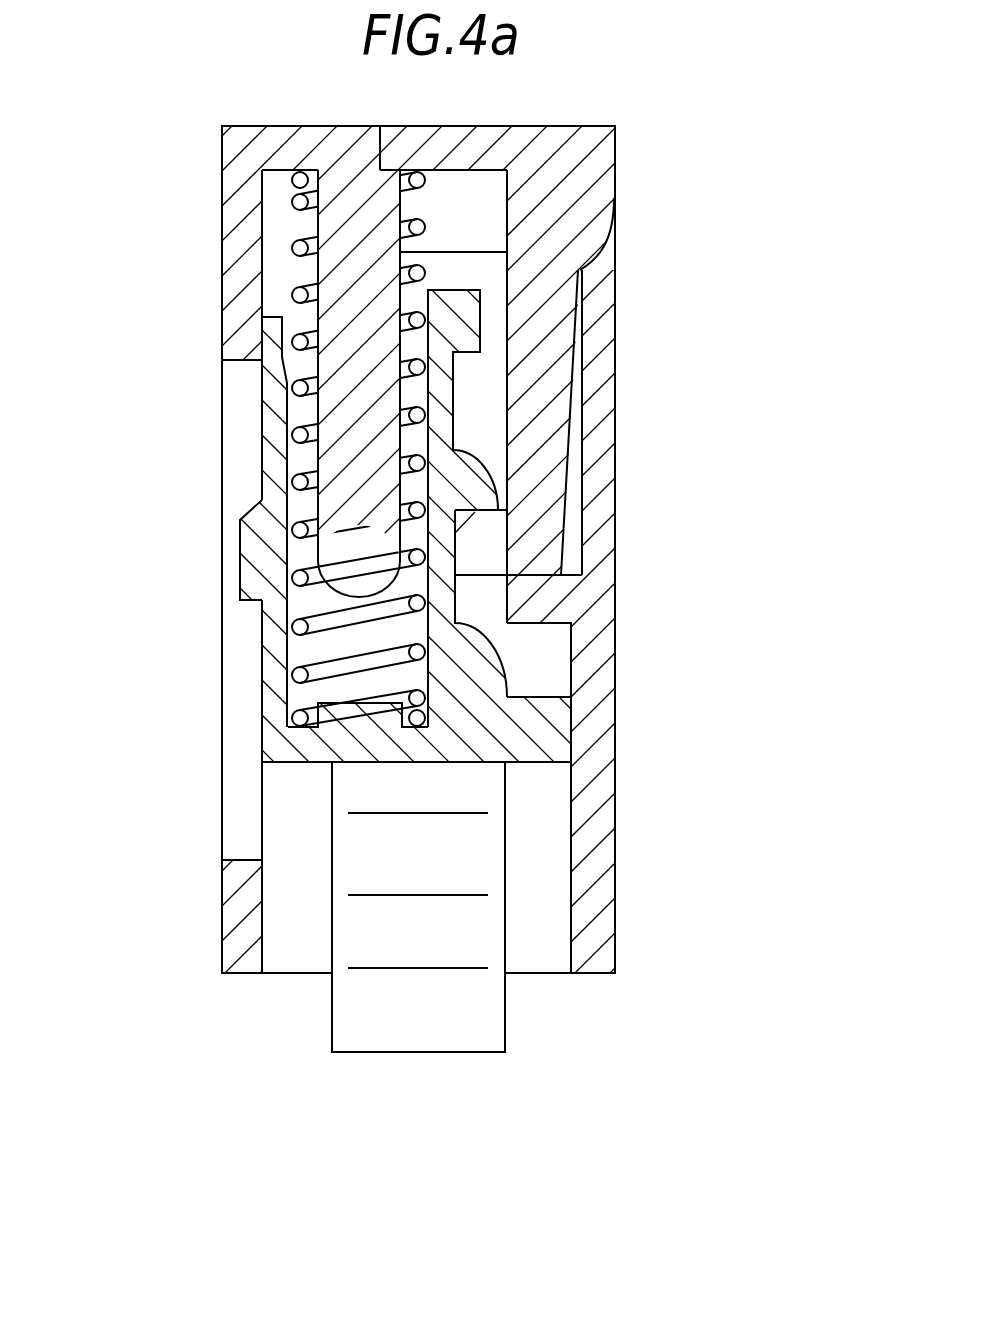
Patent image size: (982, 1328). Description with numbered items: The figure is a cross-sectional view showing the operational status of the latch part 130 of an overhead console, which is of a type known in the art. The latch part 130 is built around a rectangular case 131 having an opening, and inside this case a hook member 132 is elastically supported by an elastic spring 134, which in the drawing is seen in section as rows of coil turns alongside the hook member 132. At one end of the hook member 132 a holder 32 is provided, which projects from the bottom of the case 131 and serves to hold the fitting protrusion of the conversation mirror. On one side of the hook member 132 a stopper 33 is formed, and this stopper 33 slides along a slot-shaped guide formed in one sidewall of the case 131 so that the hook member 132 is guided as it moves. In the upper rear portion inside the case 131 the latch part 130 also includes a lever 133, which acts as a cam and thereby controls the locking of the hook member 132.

The latch part 130 is at (738, 520).
The lever 133 is at (552, 340).
The rectangular case 131 is at (594, 595).
The hook member 132 is at (545, 730).
The elastic spring 134 is at (293, 248).
The stopper 33 is at (250, 547).
The holder 32 is at (458, 1020).